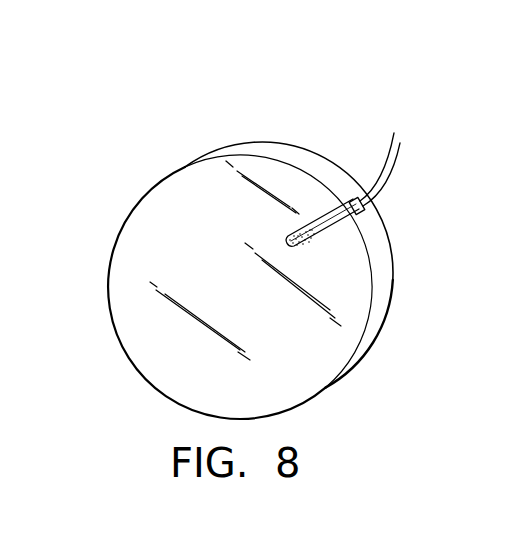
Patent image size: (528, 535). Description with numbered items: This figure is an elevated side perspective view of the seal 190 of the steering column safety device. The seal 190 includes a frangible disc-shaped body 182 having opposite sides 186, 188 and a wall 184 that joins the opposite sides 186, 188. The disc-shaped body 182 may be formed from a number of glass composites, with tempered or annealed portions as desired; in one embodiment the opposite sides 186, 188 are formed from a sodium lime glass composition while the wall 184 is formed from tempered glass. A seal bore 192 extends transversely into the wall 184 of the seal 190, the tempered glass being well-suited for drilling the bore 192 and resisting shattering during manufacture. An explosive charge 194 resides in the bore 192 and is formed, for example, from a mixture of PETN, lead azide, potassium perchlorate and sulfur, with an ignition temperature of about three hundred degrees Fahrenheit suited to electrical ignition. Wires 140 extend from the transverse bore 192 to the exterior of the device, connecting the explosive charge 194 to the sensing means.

The seal 190 is at (118, 103).
The opposite side 186 is at (298, 147).
The opposite side 188 is at (244, 294).
The frangible disc-shaped body 182 is at (390, 252).
The wall 184 is at (381, 304).
The wires 140 is at (393, 163).
The seal bore 192 is at (351, 215).
The explosive charge 194 is at (294, 238).